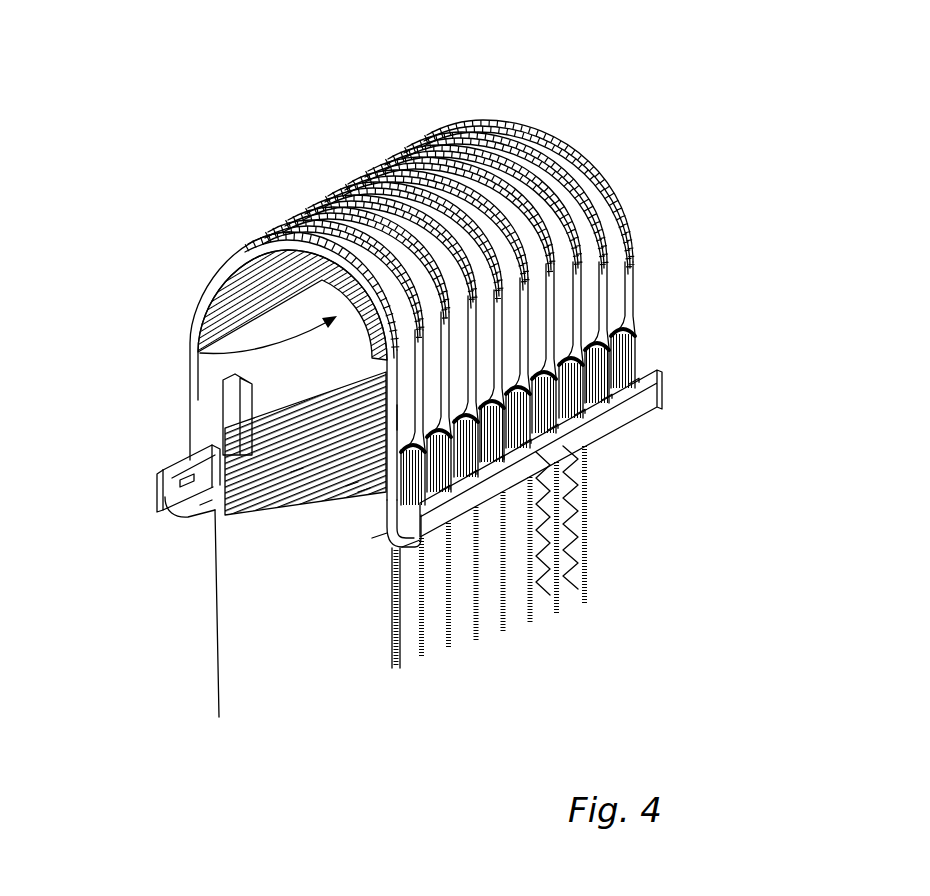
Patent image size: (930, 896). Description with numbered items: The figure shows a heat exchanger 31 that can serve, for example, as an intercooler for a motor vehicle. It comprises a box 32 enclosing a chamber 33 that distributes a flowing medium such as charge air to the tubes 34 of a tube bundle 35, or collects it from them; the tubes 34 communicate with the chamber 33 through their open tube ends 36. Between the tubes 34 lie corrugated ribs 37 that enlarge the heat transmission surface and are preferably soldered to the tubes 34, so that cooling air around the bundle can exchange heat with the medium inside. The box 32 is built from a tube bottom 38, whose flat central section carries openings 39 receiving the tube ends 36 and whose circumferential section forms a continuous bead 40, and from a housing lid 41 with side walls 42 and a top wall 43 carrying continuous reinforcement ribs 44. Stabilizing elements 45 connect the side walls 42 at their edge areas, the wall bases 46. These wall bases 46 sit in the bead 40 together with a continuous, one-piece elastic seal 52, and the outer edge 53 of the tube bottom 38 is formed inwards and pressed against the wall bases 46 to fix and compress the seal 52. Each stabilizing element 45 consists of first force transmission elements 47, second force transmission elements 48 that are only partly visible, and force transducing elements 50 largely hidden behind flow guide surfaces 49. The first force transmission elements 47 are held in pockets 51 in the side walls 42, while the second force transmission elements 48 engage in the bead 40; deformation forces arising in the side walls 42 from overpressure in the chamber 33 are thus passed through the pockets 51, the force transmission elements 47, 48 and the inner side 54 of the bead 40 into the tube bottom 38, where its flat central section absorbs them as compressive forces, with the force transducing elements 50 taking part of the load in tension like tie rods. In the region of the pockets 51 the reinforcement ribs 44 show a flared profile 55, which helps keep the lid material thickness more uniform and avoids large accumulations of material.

The heat exchanger 31 is at (150, 148).
The box 32 is at (553, 108).
The chamber 33 is at (197, 350).
The tubes 34 is at (290, 594).
The tube bundle 35 is at (604, 606).
The tube ends 36 is at (205, 513).
The corrugated ribs 37 is at (587, 507).
The tube bottom 38 is at (364, 490).
The openings 39 is at (352, 485).
The bead 40 is at (187, 510).
The housing lid 41 is at (351, 166).
The side walls 42 is at (351, 458).
The top wall 43 is at (292, 272).
The reinforcement ribs 44 is at (466, 133).
The stabilizing elements 45 is at (397, 420).
The wall bases 46 is at (398, 495).
The first force transmission elements 47 is at (217, 460).
The second force transmission elements 48 is at (200, 470).
The flow guide surfaces 49 is at (297, 470).
The force transducing elements 50 is at (250, 453).
The pockets 51 is at (247, 425).
The seal 52 is at (160, 507).
The outer edge 53 is at (195, 470).
The inner side 54 is at (170, 498).
The flared profile 55 is at (400, 287).